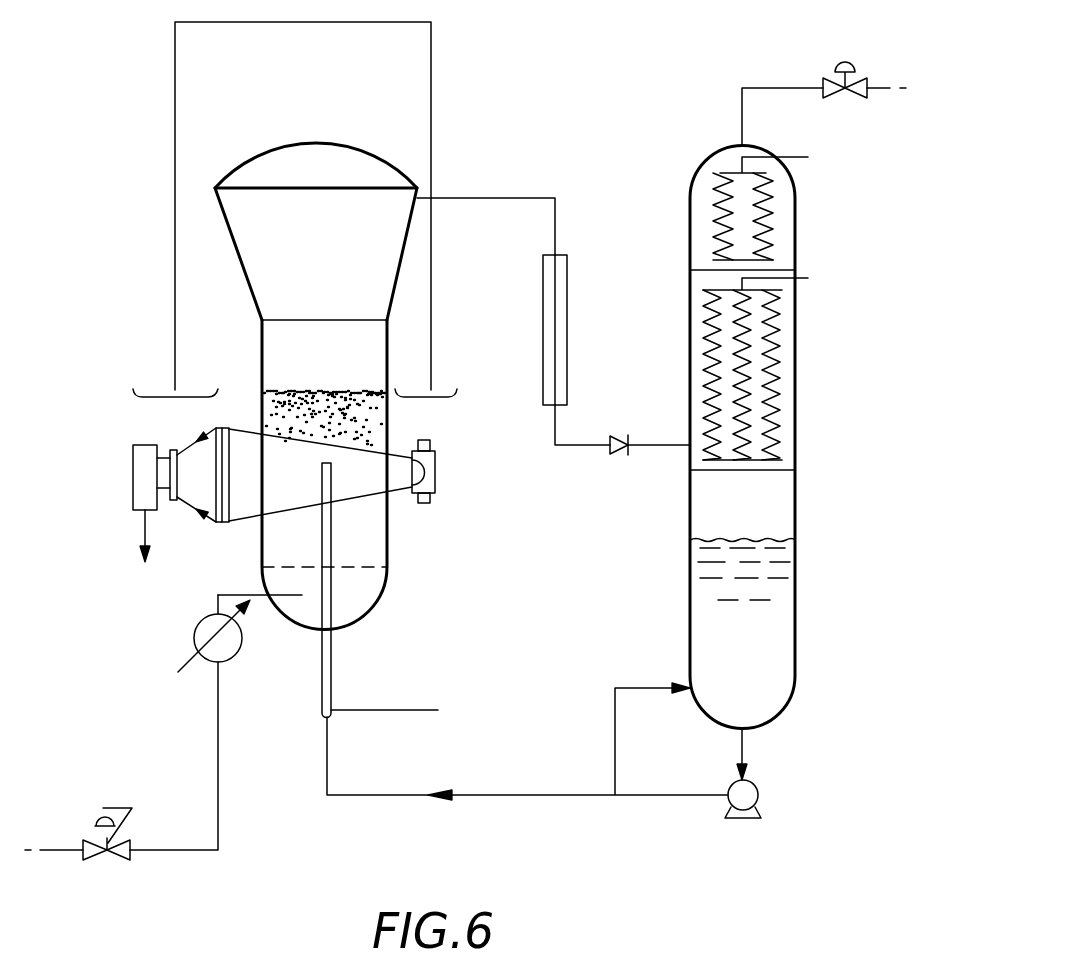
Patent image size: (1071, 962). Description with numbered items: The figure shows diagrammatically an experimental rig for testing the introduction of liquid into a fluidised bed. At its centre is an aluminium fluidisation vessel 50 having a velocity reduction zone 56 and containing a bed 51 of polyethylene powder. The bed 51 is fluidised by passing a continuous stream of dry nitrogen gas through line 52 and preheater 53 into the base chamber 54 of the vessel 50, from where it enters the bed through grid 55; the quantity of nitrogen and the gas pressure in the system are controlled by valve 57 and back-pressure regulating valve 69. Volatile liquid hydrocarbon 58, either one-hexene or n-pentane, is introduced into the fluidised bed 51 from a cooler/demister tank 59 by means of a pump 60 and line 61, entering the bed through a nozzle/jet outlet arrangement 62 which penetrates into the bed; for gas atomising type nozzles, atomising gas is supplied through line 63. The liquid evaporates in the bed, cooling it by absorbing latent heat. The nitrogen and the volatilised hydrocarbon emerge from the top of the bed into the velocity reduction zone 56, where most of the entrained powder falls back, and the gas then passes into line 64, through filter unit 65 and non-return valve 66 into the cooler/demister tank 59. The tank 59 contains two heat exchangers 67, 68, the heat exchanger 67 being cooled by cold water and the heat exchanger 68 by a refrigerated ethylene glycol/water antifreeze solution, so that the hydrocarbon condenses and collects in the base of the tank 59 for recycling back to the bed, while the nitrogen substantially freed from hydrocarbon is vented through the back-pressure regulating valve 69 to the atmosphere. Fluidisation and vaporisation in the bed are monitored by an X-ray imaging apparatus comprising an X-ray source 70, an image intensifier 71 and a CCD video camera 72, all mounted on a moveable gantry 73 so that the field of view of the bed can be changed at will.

The fluidisation vessel 50 is at (341, 371).
The bed 51 is at (365, 527).
The line 52 is at (218, 763).
The preheater 53 is at (193, 638).
The base chamber 54 is at (348, 590).
The grid 55 is at (387, 575).
The velocity reduction zone 56 is at (254, 244).
The valve 57 is at (107, 862).
The volatile liquid hydrocarbon 58 is at (722, 617).
The cooler/demister tank 59 is at (760, 523).
The pump 60 is at (728, 801).
The line 61 is at (375, 793).
The nozzle/jet outlet arrangement 62 is at (320, 479).
The line 63 is at (405, 710).
The line 64 is at (494, 198).
The filter unit 65 is at (567, 305).
The non-return valve 66 is at (622, 435).
The heat exchanger 67 is at (757, 375).
The heat exchanger 68 is at (745, 207).
The back-pressure regulating valve 69 is at (832, 68).
The X-ray source 70 is at (435, 472).
The image intensifier 71 is at (223, 525).
The CCD video camera 72 is at (133, 473).
The moveable gantry 73 is at (175, 105).